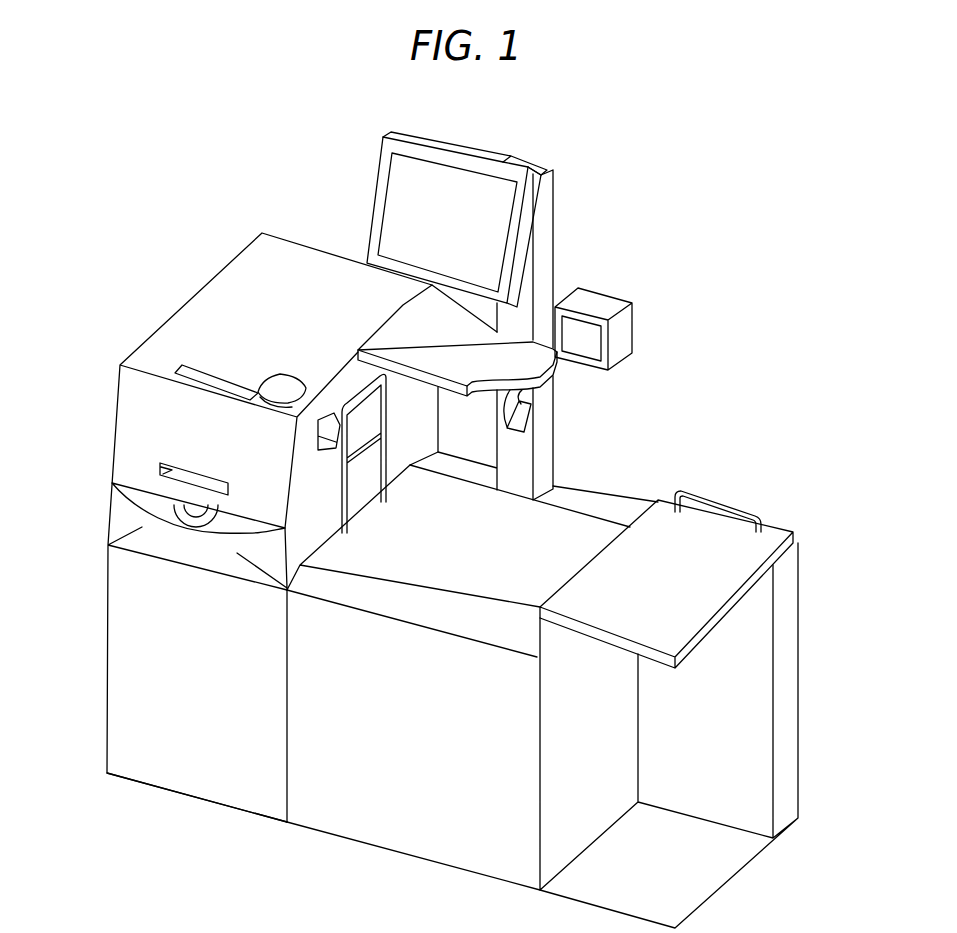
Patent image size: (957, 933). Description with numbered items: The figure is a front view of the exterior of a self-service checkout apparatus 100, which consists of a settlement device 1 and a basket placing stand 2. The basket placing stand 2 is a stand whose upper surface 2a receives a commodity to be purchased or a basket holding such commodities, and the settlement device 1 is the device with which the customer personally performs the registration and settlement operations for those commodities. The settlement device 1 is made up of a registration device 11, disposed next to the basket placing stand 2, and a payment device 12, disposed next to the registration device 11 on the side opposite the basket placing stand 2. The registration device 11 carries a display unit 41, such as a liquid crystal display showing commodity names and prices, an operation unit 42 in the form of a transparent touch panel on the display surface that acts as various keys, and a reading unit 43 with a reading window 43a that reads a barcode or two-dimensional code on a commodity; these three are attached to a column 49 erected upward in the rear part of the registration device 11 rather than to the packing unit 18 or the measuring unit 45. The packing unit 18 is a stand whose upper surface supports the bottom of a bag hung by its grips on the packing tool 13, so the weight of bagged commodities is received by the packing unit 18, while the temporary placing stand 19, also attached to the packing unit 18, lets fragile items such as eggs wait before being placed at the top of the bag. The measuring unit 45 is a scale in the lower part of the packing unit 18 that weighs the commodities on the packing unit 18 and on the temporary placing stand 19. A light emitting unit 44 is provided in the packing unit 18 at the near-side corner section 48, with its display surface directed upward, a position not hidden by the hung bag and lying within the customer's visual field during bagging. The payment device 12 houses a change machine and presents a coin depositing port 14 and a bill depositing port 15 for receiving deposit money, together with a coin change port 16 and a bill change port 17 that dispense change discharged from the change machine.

The self-service checkout apparatus 100 is at (737, 166).
The settlement device 1 is at (281, 834).
The registration device 11 is at (313, 820).
The payment device 12 is at (134, 764).
The packing tool 13 is at (321, 420).
The coin depositing port 14 is at (288, 373).
The bill depositing port 15 is at (228, 373).
The coin change port 16 is at (193, 507).
The bill change port 17 is at (190, 473).
The packing unit 18 is at (498, 563).
The temporary placing stand 19 is at (392, 333).
The display unit 41 is at (471, 173).
The operation unit 42 is at (397, 177).
The reading unit 43 is at (606, 307).
The reading window 43a is at (594, 340).
The light emitting unit 44 is at (395, 606).
The measuring unit 45 is at (582, 531).
The corner section 48 is at (350, 596).
The column 49 is at (520, 448).
The basket placing stand 2 is at (717, 563).
The upper surface 2a is at (667, 587).